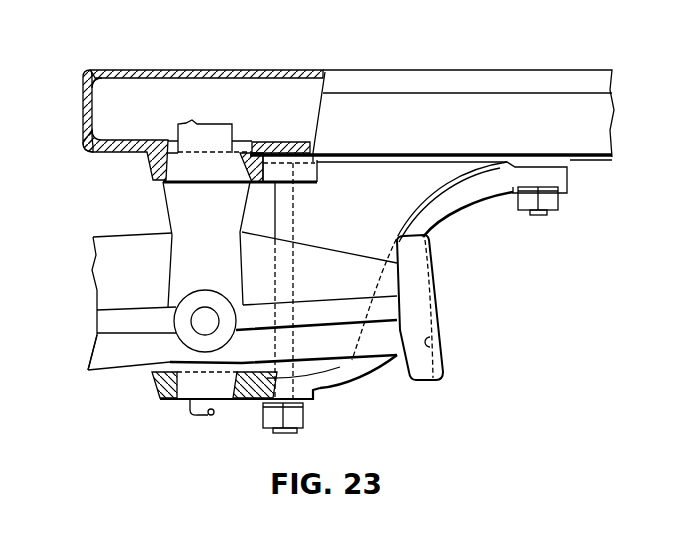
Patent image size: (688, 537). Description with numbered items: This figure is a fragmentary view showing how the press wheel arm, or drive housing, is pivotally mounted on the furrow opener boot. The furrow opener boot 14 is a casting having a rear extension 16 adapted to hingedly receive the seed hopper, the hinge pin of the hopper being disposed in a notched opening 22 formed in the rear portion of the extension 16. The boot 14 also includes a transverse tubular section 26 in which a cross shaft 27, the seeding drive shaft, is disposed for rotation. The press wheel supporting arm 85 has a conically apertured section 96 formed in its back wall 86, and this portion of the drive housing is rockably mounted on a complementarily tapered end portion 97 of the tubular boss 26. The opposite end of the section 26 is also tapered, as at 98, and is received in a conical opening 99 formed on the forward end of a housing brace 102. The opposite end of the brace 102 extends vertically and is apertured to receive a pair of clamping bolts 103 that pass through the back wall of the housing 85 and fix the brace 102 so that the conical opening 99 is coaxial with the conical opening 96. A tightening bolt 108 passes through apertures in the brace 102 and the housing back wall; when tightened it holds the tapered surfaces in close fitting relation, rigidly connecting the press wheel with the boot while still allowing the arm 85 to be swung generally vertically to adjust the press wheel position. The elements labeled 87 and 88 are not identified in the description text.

The furrow opener boot 14 is at (104, 376).
The rear extension 16 is at (393, 356).
The notched opening 22 is at (447, 352).
The transverse tubular section 26 is at (180, 262).
The cross shaft 27 is at (216, 413).
The press wheel supporting arm 85 is at (527, 70).
The back wall 86 is at (136, 151).
The tray side wall 87 is at (83, 108).
The tray top wall 88 is at (147, 70).
The conically apertured section 96 is at (176, 144).
The tapered end portion 97 is at (177, 174).
The tapered end portion 98 is at (188, 392).
The conical opening 99 is at (166, 386).
The housing brace 102 is at (446, 208).
The clamping bolts 103 is at (539, 210).
The tightening bolt 108 is at (286, 222).